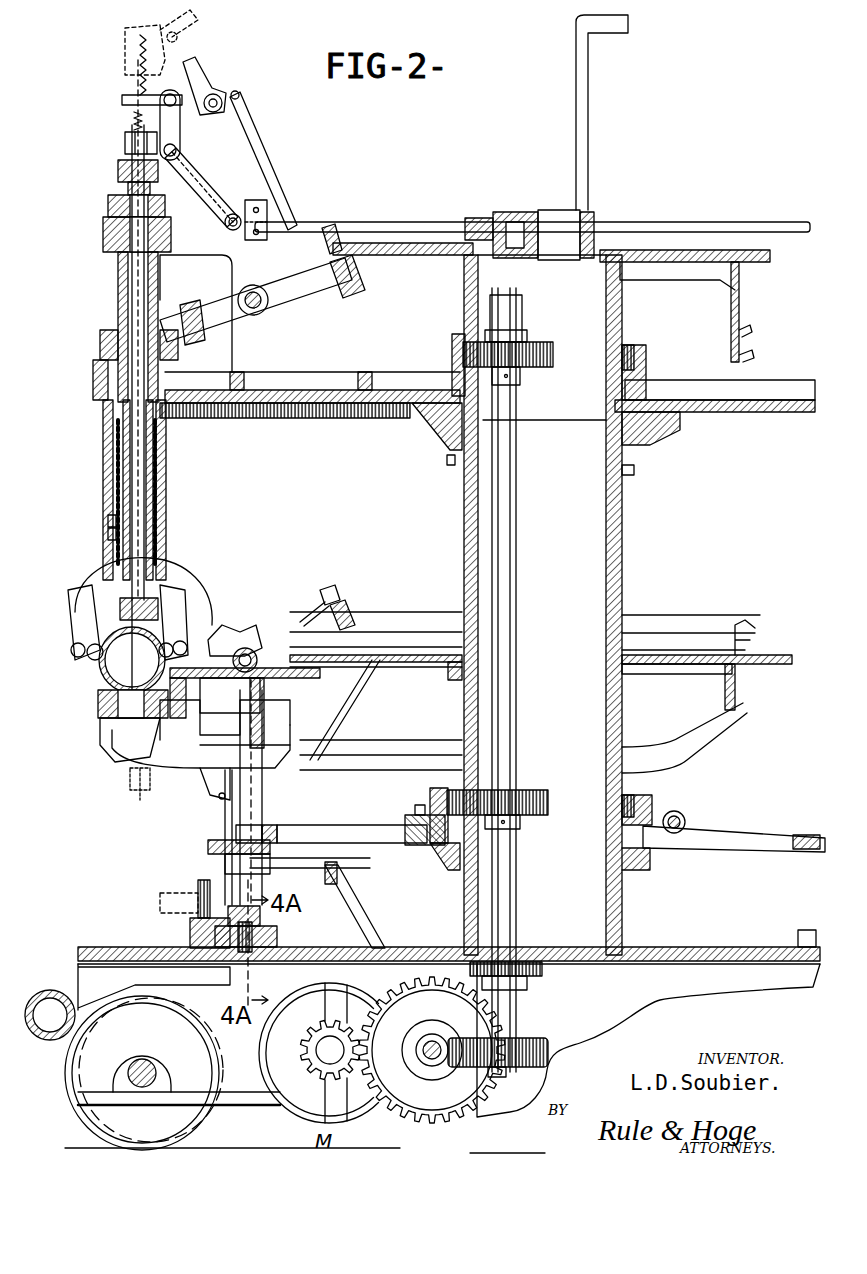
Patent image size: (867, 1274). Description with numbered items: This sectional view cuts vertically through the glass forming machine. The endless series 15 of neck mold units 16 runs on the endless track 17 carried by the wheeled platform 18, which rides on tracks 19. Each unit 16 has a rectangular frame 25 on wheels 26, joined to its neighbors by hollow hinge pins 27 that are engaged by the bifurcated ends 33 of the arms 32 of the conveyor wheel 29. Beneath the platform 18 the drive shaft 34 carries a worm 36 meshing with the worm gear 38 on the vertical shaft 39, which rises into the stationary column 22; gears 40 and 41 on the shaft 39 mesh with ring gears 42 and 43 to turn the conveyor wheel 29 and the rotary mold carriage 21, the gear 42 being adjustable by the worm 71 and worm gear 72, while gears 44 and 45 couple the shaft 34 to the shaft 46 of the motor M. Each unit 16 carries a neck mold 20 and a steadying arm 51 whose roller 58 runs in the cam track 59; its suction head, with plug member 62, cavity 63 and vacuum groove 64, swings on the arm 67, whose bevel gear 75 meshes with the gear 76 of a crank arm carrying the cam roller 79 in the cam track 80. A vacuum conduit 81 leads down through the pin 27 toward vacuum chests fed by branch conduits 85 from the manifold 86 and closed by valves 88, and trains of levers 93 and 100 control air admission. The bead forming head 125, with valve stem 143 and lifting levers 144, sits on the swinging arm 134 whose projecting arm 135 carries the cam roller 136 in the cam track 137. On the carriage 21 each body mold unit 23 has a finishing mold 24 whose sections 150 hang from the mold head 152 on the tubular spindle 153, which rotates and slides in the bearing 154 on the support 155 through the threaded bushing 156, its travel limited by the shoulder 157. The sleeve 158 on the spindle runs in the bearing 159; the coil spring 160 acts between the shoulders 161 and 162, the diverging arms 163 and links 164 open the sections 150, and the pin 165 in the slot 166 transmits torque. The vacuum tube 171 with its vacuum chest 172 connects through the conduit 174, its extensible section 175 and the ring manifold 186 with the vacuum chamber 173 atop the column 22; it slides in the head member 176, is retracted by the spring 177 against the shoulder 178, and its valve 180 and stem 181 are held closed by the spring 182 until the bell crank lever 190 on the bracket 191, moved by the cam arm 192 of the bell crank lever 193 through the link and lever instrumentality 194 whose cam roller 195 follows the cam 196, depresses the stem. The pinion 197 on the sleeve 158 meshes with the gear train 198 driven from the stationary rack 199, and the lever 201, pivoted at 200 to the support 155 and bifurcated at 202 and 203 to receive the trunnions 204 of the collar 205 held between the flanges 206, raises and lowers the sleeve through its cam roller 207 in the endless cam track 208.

The bracket plate 15 is at (199, 852).
The housing 16 is at (205, 704).
The bearing block 17 is at (190, 932).
The base plate 18 is at (80, 947).
The frame 19 is at (405, 1132).
The mold block 20 is at (100, 705).
The table plate 21 is at (745, 412).
The column 22 is at (623, 531).
The plunger assembly 23 is at (92, 504).
The ring 24 is at (100, 668).
The rod 25 is at (224, 810).
The bracket 26 is at (198, 915).
The spindle 27 is at (255, 800).
The bracket 29 is at (405, 830).
The arm 32 is at (742, 842).
The block 33 is at (812, 835).
The shaft 34 is at (430, 1060).
The hub 36 is at (452, 1020).
The worm 38 is at (520, 1042).
The vertical shaft 39 is at (508, 655).
The gear 40 is at (525, 798).
The gear 41 is at (553, 358).
The bracket 42 is at (435, 790).
The flange 43 is at (455, 340).
The gear wheel 44 is at (410, 1037).
The ring gear 45 is at (340, 1010).
The pinion 46 is at (330, 1050).
The plate 51 is at (272, 680).
The plate 58 is at (292, 708).
The shelf 59 is at (330, 676).
The block 62 is at (262, 916).
The bearing 63 is at (278, 930).
The bearing 64 is at (278, 942).
The head 67 is at (190, 580).
The roller 71 is at (686, 818).
The block 72 is at (660, 822).
The ratchet 75 is at (238, 640).
The pawl 76 is at (262, 640).
The rod 79 is at (332, 632).
The link 80 is at (335, 618).
The roller 81 is at (255, 664).
The bar 85 is at (176, 972).
The wheel 86 is at (50, 1036).
The clip 88 is at (742, 622).
The link 93 is at (318, 612).
The link 100 is at (300, 618).
The bracket 125 is at (125, 738).
The bar 134 is at (224, 746).
The plate 135 is at (262, 715).
The rods 136 is at (322, 742).
The pipe 137 is at (300, 760).
The spring 143 is at (135, 768).
The lever 144 is at (176, 770).
The block 150 is at (100, 692).
The arm 152 is at (100, 583).
The sleeve 153 is at (158, 472).
The nut 154 is at (103, 242).
The housing 155 is at (236, 268).
The collar 156 is at (108, 210).
The tube 157 is at (118, 296).
The sleeve 158 is at (158, 506).
The block 159 is at (93, 383).
The sleeve 160 is at (158, 487).
The sleeve 161 is at (160, 497).
The gear 162 is at (105, 405).
The arm 163 is at (135, 115).
The pivot 164 is at (87, 652).
The pin 165 is at (108, 521).
The pin 166 is at (115, 535).
The flange 171 is at (118, 172).
The arm 172 is at (182, 608).
The post 173 is at (540, 193).
The rod 174 is at (425, 222).
The cylinder 175 is at (203, 184).
The block 176 is at (125, 148).
The spring 177 is at (158, 456).
The spring 178 is at (116, 452).
The tip 180 is at (118, 598).
The sleeve 181 is at (158, 540).
The spring 182 is at (132, 124).
The nut 186 is at (472, 218).
The bracket 190 is at (135, 95).
The link 191 is at (215, 118).
The lever 192 is at (200, 80).
The pivot 193 is at (240, 95).
The bar 194 is at (260, 152).
The bracket 195 is at (330, 228).
The plate 196 is at (340, 246).
The plate 197 is at (172, 432).
The gear 198 is at (325, 424).
The brace 199 is at (403, 430).
The arm 200 is at (257, 316).
The pin 201 is at (305, 305).
The block 202 is at (182, 343).
The pin 203 is at (135, 330).
The block 204 is at (100, 346).
The block 205 is at (100, 357).
The block 206 is at (110, 336).
The block 207 is at (338, 278).
The block 208 is at (348, 298).